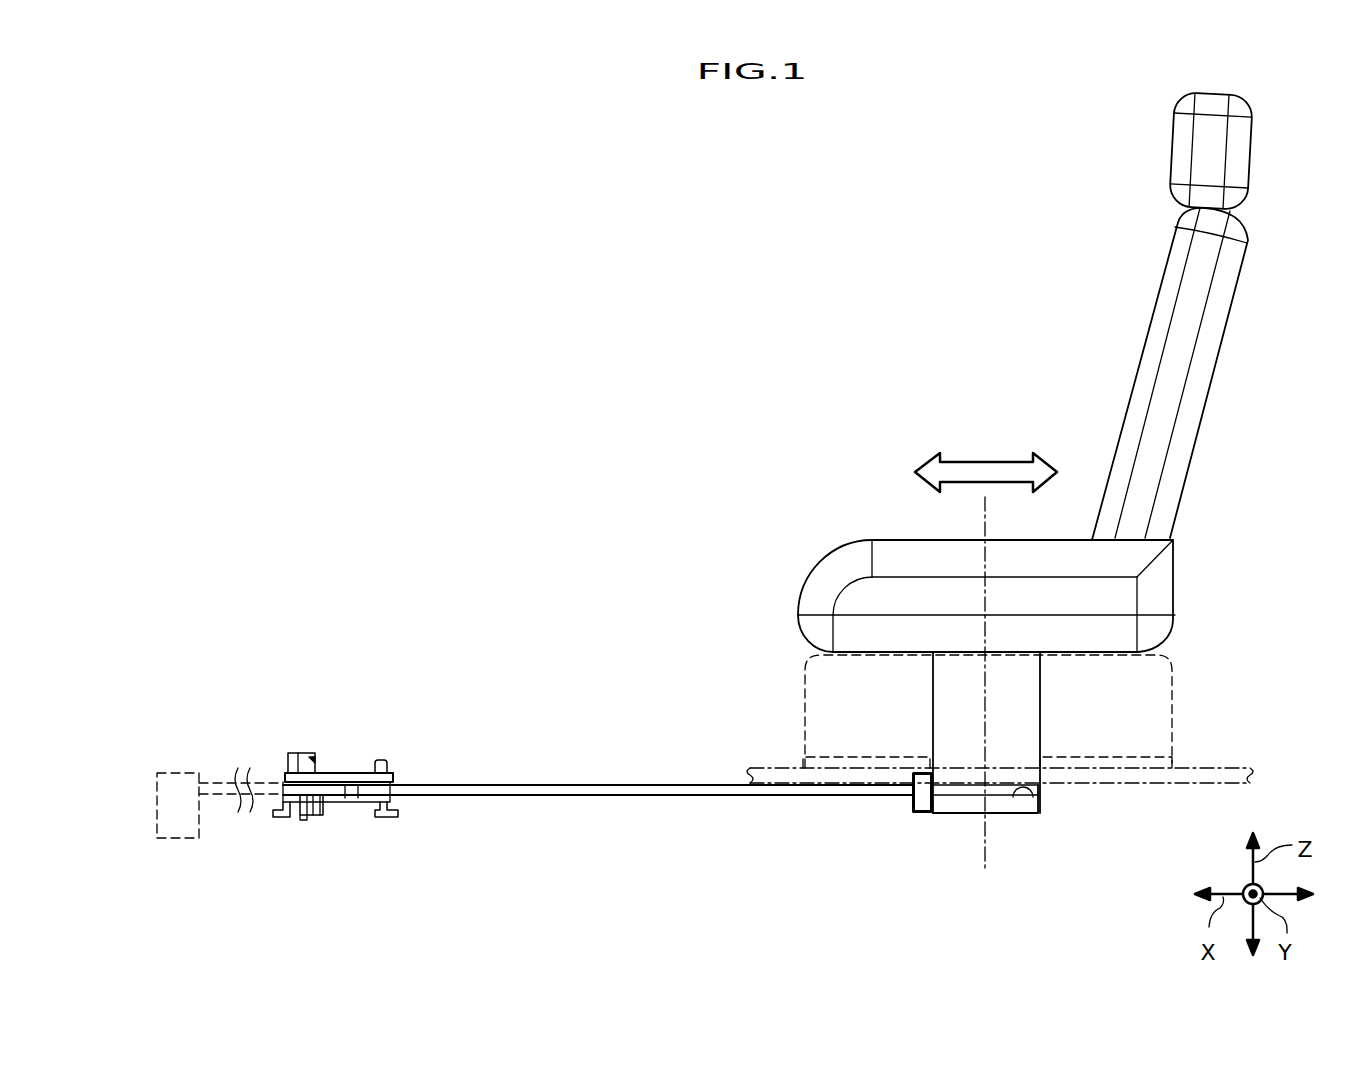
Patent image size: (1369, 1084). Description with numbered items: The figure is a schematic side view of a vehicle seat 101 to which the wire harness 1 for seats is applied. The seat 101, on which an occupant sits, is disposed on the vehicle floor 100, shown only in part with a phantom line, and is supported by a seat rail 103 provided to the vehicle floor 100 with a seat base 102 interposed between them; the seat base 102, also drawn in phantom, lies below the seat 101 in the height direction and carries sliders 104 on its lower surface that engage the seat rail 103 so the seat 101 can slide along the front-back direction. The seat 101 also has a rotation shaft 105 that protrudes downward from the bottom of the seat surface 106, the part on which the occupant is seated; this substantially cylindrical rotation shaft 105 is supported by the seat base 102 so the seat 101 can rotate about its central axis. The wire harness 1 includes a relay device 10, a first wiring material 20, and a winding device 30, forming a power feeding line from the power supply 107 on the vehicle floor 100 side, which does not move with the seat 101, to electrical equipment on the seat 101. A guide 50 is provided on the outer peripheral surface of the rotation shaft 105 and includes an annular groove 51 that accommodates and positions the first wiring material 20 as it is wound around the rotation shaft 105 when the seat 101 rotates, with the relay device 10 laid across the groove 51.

The wire harness for seats 1 is at (566, 718).
The relay device 10 is at (923, 828).
The first wiring material 20 is at (602, 814).
The winding device 30 is at (368, 832).
The guide 50 is at (990, 858).
The groove 51 is at (1032, 797).
The vehicle floor 100 is at (962, 730).
The seat 101 is at (1138, 270).
The seat base 102 is at (1172, 673).
The seat rail 103 is at (762, 767).
The slider 104 is at (843, 758).
The rotation shaft 105 is at (1054, 717).
The seat surface 106 is at (915, 597).
The power supply 107 is at (180, 840).